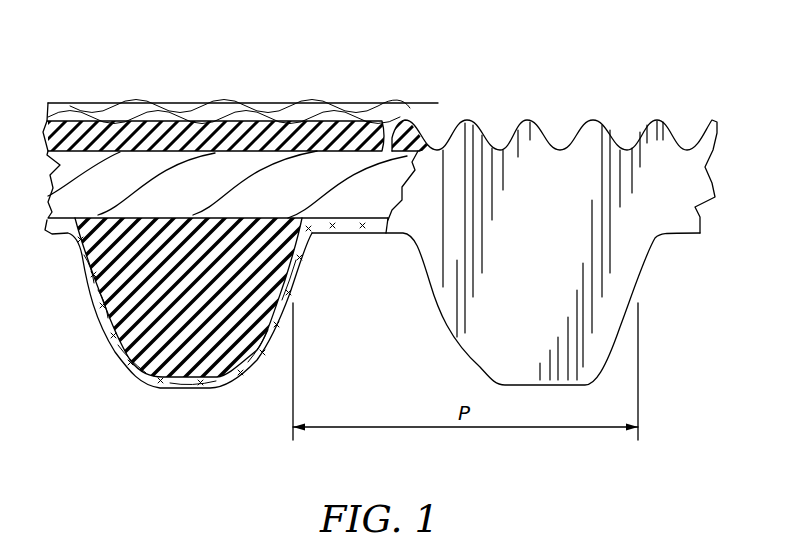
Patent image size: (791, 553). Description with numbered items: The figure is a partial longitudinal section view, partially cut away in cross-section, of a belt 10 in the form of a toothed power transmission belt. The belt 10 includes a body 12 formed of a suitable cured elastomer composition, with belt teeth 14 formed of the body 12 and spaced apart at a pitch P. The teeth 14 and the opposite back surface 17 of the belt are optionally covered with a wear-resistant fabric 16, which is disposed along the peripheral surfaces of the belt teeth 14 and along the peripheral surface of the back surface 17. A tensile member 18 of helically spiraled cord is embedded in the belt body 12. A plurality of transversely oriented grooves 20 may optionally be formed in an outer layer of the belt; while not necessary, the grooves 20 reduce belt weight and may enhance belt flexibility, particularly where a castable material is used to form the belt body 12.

The belt 10 is at (372, 98).
The body 12 is at (208, 112).
The belt teeth 14 is at (232, 386).
The wear-resistant fabric 16 is at (272, 108).
The back surface 17 is at (200, 118).
The tensile member 18 is at (162, 170).
The grooves 20 is at (502, 122).